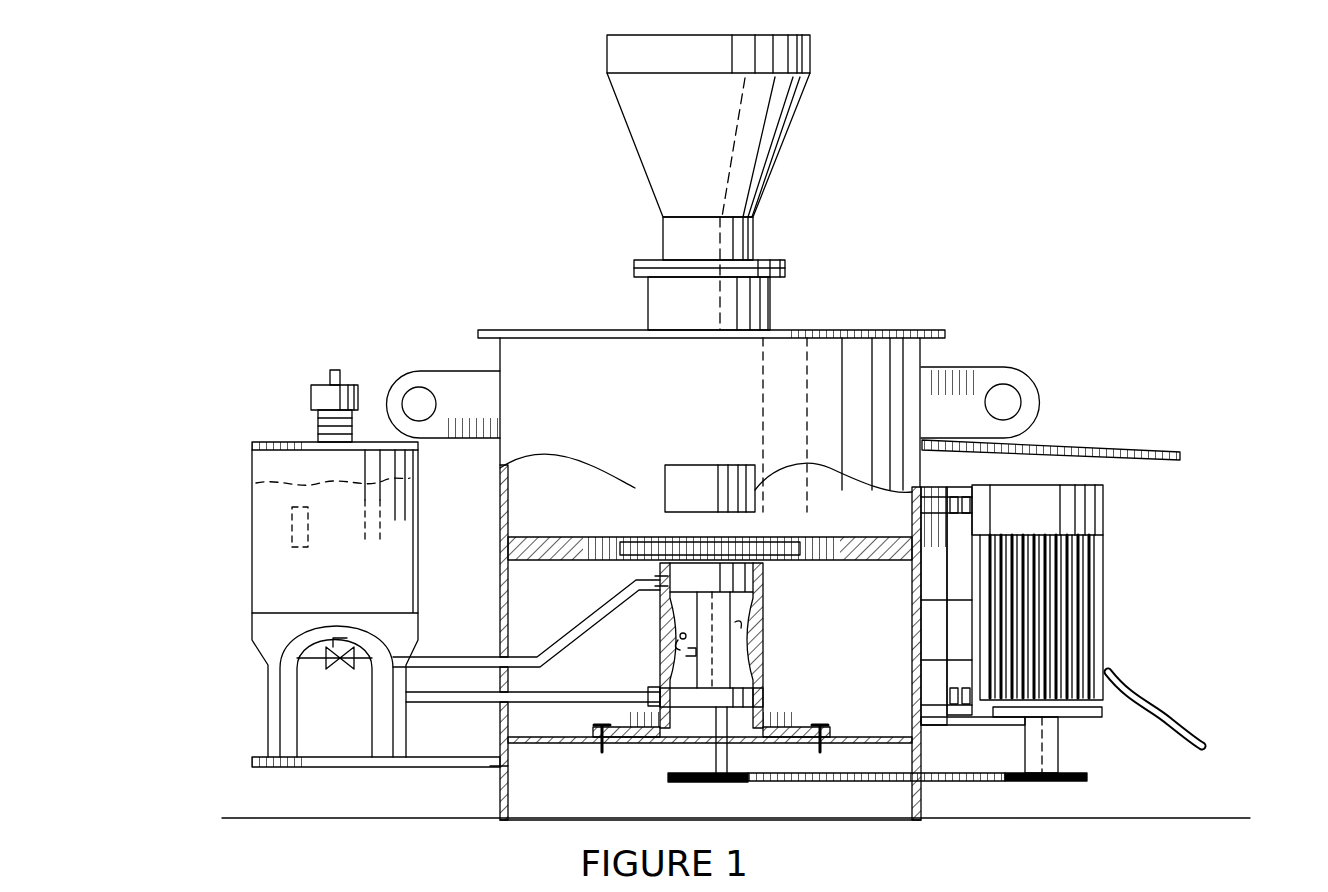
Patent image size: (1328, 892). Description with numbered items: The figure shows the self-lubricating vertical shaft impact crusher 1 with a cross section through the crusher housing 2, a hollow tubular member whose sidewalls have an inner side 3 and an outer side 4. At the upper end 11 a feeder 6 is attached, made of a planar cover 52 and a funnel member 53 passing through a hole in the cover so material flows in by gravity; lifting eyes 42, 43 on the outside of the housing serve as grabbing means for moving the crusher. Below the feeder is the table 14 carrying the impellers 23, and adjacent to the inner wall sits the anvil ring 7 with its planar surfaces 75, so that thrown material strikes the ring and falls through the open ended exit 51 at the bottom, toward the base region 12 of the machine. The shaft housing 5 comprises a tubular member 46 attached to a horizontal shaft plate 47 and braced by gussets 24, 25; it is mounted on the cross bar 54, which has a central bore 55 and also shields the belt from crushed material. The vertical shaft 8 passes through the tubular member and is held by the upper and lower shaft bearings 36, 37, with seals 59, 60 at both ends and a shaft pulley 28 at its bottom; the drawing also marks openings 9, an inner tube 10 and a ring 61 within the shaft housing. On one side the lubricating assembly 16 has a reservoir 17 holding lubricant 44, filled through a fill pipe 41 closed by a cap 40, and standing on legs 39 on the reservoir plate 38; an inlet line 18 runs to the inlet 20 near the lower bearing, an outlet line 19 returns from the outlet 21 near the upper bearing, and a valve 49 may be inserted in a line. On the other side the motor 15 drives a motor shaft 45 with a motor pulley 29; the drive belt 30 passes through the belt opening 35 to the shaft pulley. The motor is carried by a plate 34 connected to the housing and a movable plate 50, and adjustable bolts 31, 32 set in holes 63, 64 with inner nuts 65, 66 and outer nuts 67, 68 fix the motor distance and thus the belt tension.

The self-lubricating vertical shaft impact crusher 1 is at (368, 138).
The crusher housing 2 is at (550, 393).
The inner side 3 is at (508, 492).
The outer side 4 is at (497, 345).
The shaft housing 5 is at (660, 628).
The feeder 6 is at (782, 235).
The anvil ring 7 is at (523, 537).
The vertical shaft 8 is at (718, 665).
The opening 9 is at (680, 642).
The inner tube 10 is at (712, 640).
The upper end 11 is at (917, 304).
The base 12 is at (472, 788).
The table 14 is at (785, 560).
The motor 15 is at (1136, 614).
The lubricating assembly 16 is at (236, 358).
The reservoir 17 is at (420, 540).
The inlet line 18 is at (430, 704).
The outlet line 19 is at (492, 655).
The inlet 20 is at (705, 780).
The outlet 21 is at (655, 581).
The impellers 23 is at (755, 493).
The gusset 24 is at (752, 705).
The gusset 25 is at (635, 730).
The shaft pulley 28 is at (715, 780).
The motor pulley 29 is at (1038, 782).
The drive belt 30 is at (950, 782).
The adjustable bolt 31 is at (940, 565).
The adjustable bolt 32 is at (990, 708).
The plate 34 is at (935, 560).
The belt opening 35 is at (920, 766).
The upper shaft bearing 36 is at (765, 580).
The lower shaft bearing 37 is at (765, 703).
The reservoir plate 38 is at (300, 757).
The legs 39 is at (396, 722).
The cap 40 is at (335, 370).
The fill pipe 41 is at (316, 420).
The lifting eye 42 is at (405, 372).
The lifting eye 43 is at (1037, 400).
The lubricant 44 is at (275, 510).
The motor shaft 45 is at (1050, 745).
The tubular member 46 is at (755, 690).
The shaft plate 47 is at (600, 730).
The valve 49 is at (342, 667).
The plate 50 is at (940, 520).
The open ended exit 51 is at (800, 800).
The planar cover 52 is at (795, 330).
The funnel member 53 is at (822, 117).
The cross bar 54 is at (885, 738).
The central bore 55 is at (665, 778).
The seal 59 is at (640, 592).
The seal 60 is at (680, 700).
The ring 61 is at (683, 636).
The hole 63 is at (940, 508).
The hole 64 is at (972, 692).
The inner nut 65 is at (958, 505).
The inner nut 66 is at (965, 665).
The outer nut 67 is at (980, 505).
The outer nut 68 is at (955, 635).
The planar surfaces 75 is at (590, 538).